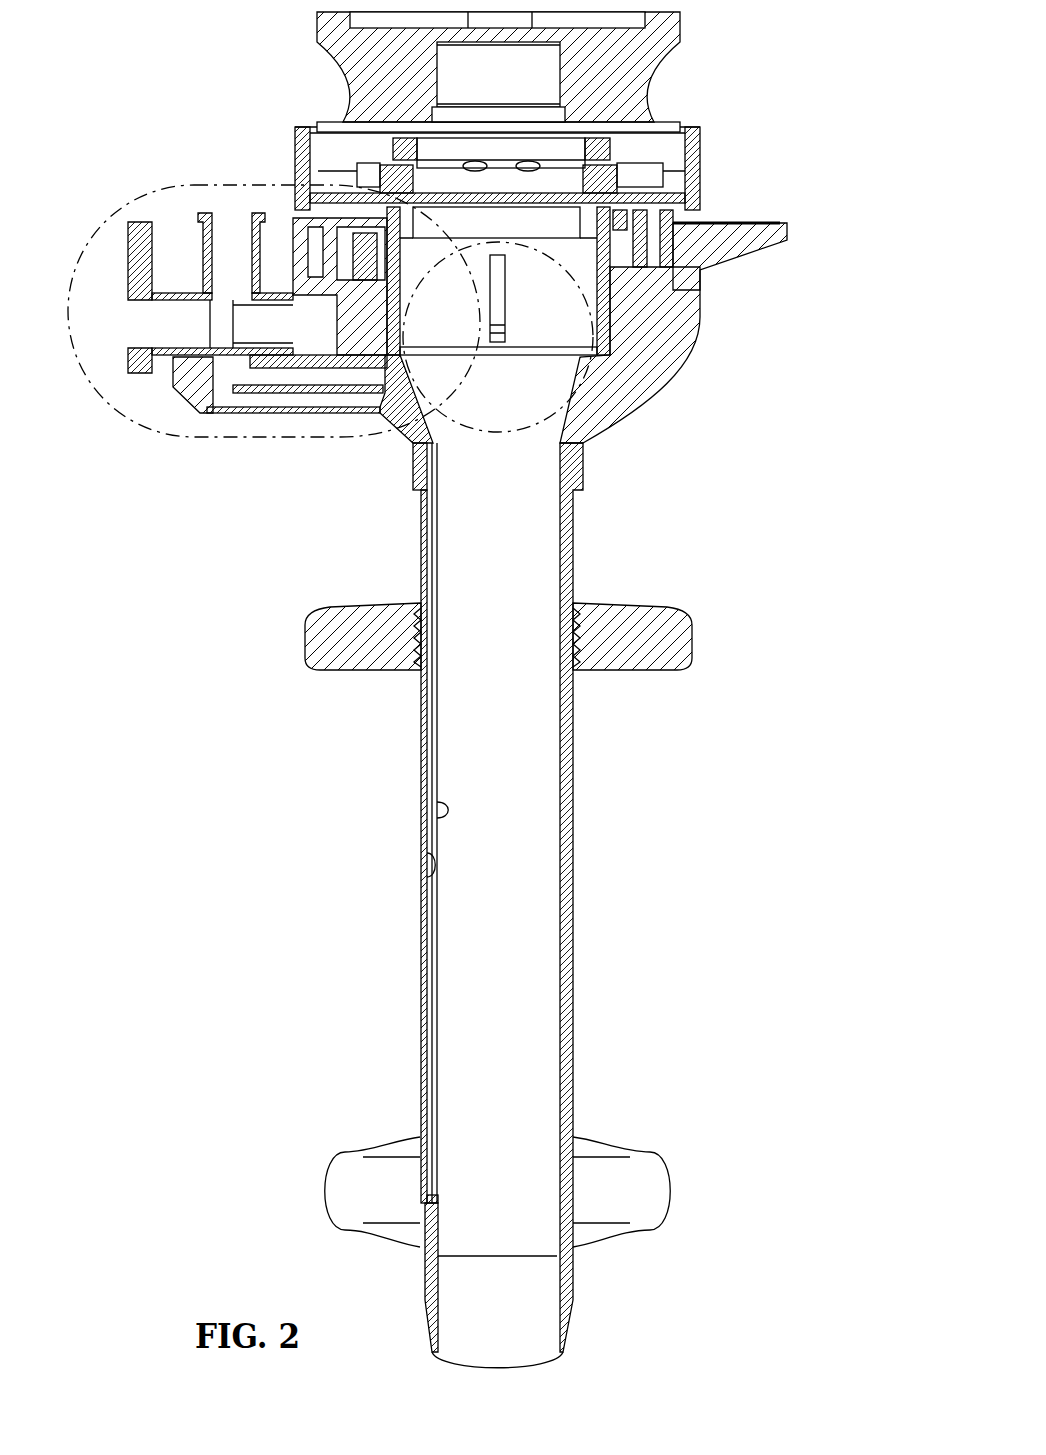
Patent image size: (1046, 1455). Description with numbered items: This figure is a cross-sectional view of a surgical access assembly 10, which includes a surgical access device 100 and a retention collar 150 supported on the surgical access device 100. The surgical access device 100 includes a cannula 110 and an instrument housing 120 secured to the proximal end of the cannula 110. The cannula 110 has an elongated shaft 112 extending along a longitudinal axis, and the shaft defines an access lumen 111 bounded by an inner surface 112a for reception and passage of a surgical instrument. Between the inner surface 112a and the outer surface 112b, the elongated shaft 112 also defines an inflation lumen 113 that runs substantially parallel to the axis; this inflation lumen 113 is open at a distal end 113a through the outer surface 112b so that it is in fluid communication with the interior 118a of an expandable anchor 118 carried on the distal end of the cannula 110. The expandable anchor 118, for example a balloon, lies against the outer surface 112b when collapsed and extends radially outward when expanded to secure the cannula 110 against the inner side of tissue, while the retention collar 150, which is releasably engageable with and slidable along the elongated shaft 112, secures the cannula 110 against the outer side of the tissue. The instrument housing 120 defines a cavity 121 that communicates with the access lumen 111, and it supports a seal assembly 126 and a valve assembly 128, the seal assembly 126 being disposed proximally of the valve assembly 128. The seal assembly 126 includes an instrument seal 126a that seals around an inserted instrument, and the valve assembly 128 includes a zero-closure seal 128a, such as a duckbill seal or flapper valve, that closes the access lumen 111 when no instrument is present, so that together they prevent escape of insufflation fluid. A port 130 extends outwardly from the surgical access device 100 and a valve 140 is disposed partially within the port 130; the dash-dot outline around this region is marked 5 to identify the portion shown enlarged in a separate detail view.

The surgical access assembly 10 is at (240, 45).
The surgical access device 100 is at (807, 295).
The cannula 110 is at (624, 781).
The access lumen 111 is at (502, 940).
The elongated shaft 112 is at (570, 863).
The inner surface 112a is at (440, 813).
The outer surface 112b is at (430, 853).
The inflation lumen 113 is at (430, 753).
The distal end 113a is at (428, 1193).
The expandable anchor 118 is at (650, 1153).
The interior 118a is at (366, 1177).
The instrument housing 120 is at (707, 60).
The cavity 121 is at (585, 272).
The seal assembly 126 is at (373, 153).
The instrument seal 126a is at (472, 165).
The valve assembly 128 is at (608, 362).
The zero-closure seal 128a is at (569, 340).
The port 130 is at (188, 181).
The valve 140 is at (103, 201).
The retention collar 150 is at (598, 603).
The detail view indicator 5 is at (276, 440).